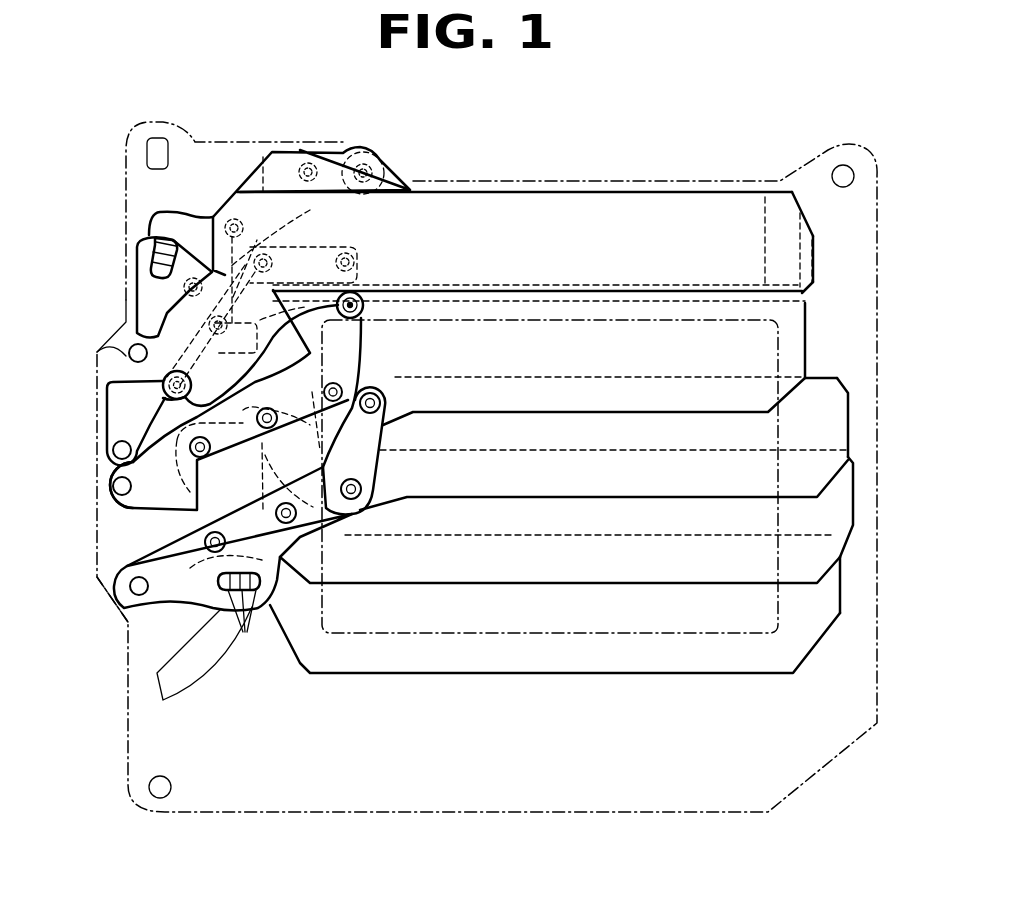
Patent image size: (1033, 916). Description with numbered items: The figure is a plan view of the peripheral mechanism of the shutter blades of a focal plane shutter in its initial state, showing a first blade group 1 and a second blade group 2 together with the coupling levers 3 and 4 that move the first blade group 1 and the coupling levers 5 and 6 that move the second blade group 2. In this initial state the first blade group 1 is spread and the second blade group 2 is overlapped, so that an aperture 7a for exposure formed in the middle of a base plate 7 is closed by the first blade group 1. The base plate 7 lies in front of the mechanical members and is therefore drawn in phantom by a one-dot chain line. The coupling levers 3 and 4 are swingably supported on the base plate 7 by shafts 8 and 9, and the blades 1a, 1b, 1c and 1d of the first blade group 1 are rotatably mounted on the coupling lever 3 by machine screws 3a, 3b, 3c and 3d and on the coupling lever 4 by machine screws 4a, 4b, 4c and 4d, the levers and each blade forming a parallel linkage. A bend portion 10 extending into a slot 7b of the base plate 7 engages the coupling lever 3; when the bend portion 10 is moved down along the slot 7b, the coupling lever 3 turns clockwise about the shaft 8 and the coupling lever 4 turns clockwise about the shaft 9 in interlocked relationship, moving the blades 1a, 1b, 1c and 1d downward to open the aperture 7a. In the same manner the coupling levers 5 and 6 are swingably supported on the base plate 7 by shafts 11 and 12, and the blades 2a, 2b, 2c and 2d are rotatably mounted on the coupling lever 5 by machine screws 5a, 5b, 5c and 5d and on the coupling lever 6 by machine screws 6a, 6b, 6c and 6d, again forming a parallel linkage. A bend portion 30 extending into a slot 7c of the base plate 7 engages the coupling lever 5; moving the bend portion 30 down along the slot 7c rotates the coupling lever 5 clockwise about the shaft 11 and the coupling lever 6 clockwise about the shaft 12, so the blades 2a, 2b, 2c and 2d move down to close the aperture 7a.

The first blade group 1 is at (728, 684).
The blade 1a is at (818, 642).
The blade 1b is at (855, 484).
The blade 1c is at (849, 408).
The blade 1d is at (806, 323).
The second blade group 2 is at (757, 168).
The blade 2a is at (808, 298).
The blade 2b is at (812, 270).
The blade 2c is at (812, 242).
The blade 2d is at (763, 227).
The coupling lever 3 is at (188, 606).
The machine screw 3a is at (207, 554).
The machine screw 3b is at (297, 527).
The machine screw 3c is at (363, 486).
The machine screw 3d is at (386, 404).
The coupling lever 4 is at (147, 504).
The machine screw 4a is at (206, 459).
The machine screw 4b is at (276, 430).
The machine screw 4c is at (343, 386).
The machine screw 4d is at (362, 296).
The coupling lever 5 is at (133, 326).
The machine screw 5a is at (184, 296).
The machine screw 5b is at (234, 220).
The machine screw 5c is at (300, 164).
The machine screw 5d is at (360, 166).
The coupling lever 6 is at (98, 416).
The machine screw 6a is at (165, 399).
The machine screw 6b is at (215, 338).
The machine screw 6c is at (267, 262).
The machine screw 6d is at (346, 258).
The base plate 7 is at (482, 810).
The aperture 7a is at (607, 634).
The slot 7b is at (200, 688).
The slot 7c is at (163, 212).
The shaft 8 is at (125, 625).
The shaft 9 is at (102, 517).
The bend portion 10 is at (245, 632).
The shaft 11 is at (98, 350).
The shaft 12 is at (98, 470).
The bend portion 30 is at (152, 245).